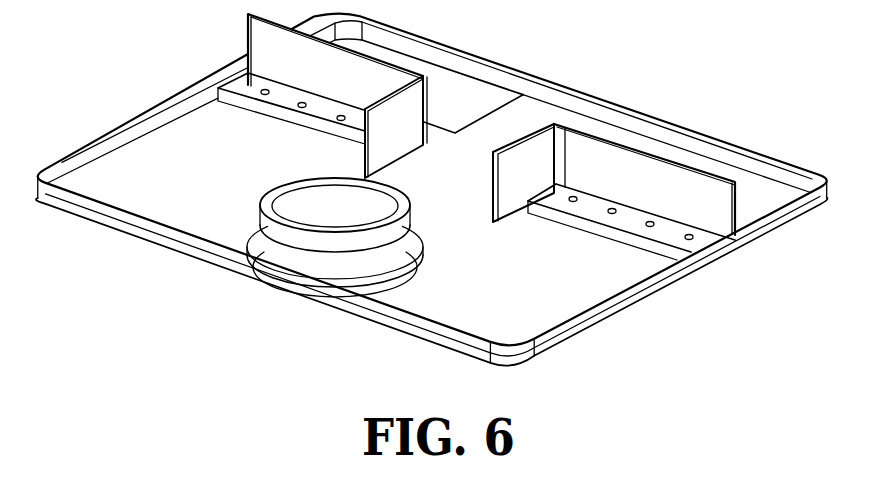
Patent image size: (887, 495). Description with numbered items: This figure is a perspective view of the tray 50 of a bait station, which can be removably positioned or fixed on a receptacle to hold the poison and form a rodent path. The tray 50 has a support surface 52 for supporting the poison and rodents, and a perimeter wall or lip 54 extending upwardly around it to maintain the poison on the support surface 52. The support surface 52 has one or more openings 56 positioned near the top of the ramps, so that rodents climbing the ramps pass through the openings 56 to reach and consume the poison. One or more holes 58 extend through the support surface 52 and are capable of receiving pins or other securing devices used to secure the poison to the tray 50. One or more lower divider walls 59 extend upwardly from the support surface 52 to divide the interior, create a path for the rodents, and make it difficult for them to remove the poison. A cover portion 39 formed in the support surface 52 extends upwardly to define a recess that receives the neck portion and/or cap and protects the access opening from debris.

The cover portion 39 is at (300, 236).
The tray 50 is at (608, 318).
The support surface 52 is at (152, 168).
The perimeter wall or lip 54 is at (595, 94).
The openings 56 is at (493, 90).
The holes 58 is at (689, 240).
The lower divider walls 59 is at (268, 43).